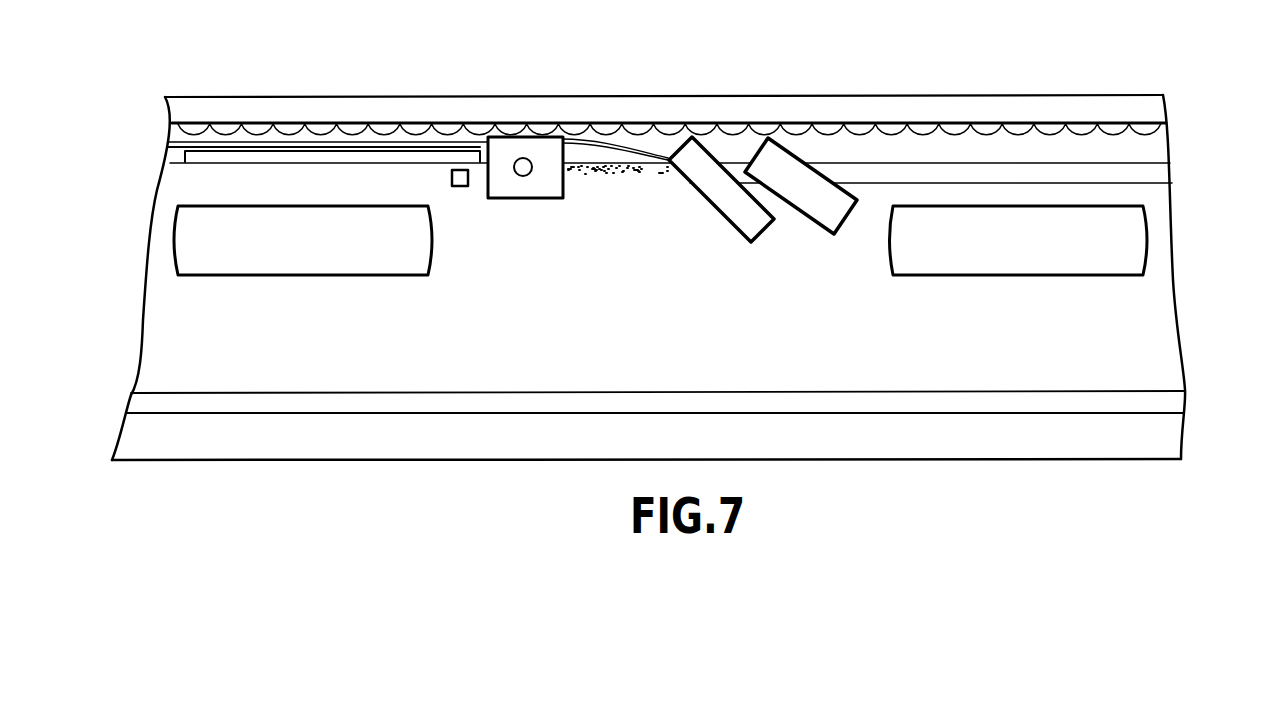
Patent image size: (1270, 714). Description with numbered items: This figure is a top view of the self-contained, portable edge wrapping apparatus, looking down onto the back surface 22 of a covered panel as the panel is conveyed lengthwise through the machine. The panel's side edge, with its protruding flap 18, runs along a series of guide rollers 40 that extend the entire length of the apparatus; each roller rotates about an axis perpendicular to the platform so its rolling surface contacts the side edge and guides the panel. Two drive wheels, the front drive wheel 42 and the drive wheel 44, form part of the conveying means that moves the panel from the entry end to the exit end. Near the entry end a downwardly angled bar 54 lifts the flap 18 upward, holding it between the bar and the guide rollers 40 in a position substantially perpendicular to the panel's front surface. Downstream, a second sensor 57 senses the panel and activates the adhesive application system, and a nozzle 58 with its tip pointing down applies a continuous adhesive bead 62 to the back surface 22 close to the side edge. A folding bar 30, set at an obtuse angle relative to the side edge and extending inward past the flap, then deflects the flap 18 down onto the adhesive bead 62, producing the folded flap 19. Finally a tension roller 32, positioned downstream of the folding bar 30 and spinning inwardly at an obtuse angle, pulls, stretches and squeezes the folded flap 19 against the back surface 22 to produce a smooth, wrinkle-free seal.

The flap 18 is at (178, 126).
The folded flap 19 is at (1143, 168).
The back surface 22 is at (692, 330).
The folding bar 30 is at (697, 152).
The tension roller 32 is at (792, 162).
The series of guide rollers 40 is at (987, 130).
The front drive wheel 42 is at (185, 237).
The drive wheel 44 is at (1135, 232).
The bar 54 is at (190, 158).
The second sensor 57 is at (452, 170).
The nozzle 58 is at (527, 145).
The adhesive bead 62 is at (632, 165).